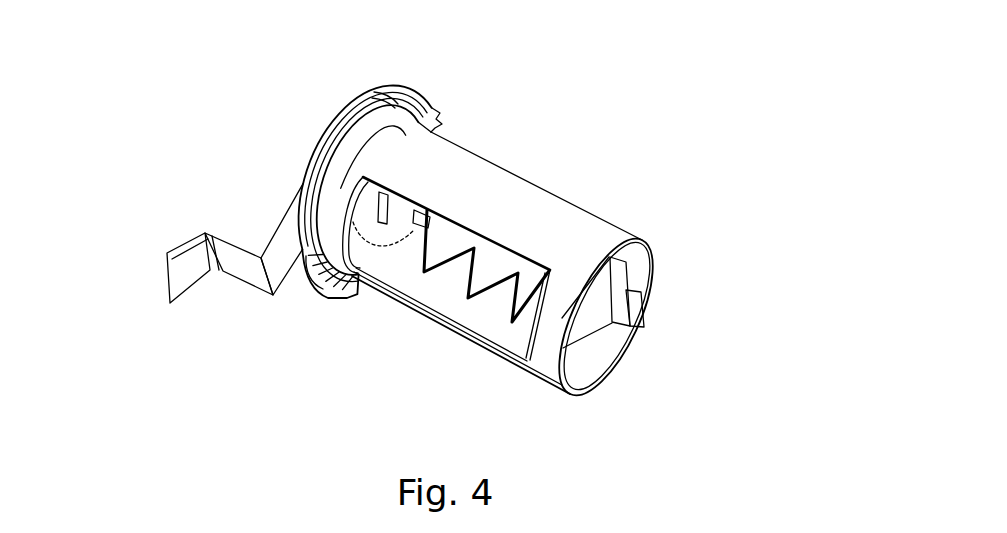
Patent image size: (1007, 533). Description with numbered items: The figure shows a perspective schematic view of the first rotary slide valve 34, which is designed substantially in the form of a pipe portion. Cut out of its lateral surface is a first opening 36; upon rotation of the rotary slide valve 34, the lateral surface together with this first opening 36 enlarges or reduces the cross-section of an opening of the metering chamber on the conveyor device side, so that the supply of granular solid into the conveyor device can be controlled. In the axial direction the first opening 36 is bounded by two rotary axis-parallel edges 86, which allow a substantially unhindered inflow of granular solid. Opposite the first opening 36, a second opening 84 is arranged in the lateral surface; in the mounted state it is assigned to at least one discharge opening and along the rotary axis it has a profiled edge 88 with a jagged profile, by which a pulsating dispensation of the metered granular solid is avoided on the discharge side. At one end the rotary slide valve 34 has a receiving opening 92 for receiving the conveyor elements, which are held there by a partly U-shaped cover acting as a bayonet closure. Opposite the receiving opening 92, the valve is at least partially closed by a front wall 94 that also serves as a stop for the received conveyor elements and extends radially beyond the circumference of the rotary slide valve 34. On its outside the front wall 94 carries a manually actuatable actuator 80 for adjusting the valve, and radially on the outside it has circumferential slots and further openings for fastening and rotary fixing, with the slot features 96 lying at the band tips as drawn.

The rotary slide valve 34 is at (616, 106).
The first opening 36 is at (474, 220).
The manually actuatable actuator 80 is at (183, 272).
The second opening 84 is at (605, 300).
The rotary axis-parallel edges 86 is at (522, 257).
The profiled edge 88 is at (492, 309).
The receiving opening 92 is at (660, 360).
The front wall 94 is at (370, 244).
The clamp band tabs 96 is at (396, 103).